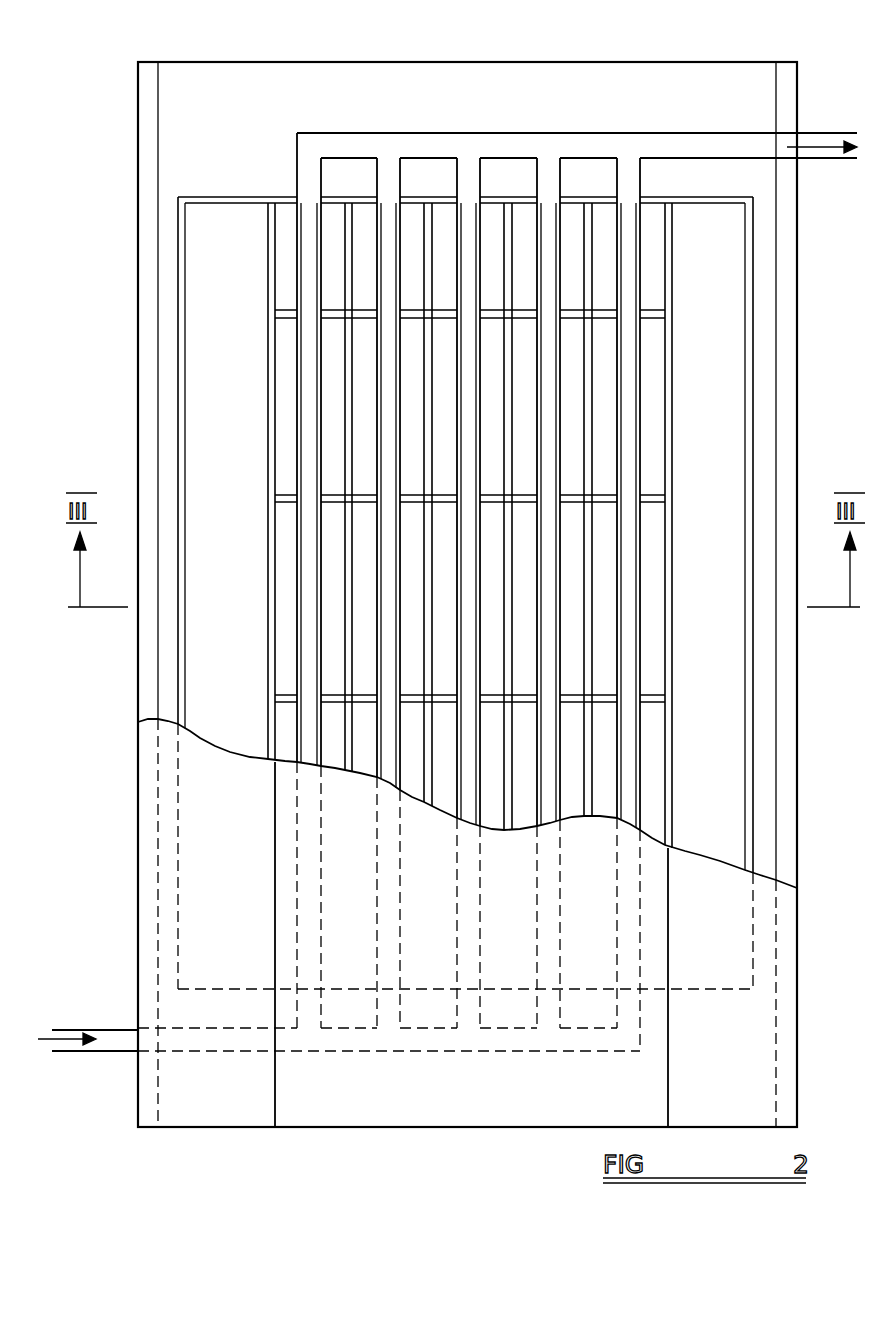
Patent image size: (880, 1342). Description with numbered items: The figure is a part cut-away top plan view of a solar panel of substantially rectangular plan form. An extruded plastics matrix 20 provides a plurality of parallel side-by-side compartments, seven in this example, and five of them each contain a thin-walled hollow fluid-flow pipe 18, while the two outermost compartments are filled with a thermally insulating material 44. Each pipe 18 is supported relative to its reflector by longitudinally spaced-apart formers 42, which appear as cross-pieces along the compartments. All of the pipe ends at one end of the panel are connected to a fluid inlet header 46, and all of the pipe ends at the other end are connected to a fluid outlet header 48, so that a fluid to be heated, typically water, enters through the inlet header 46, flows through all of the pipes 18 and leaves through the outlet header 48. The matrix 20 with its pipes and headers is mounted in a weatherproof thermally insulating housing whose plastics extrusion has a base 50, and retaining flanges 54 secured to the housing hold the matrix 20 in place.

The base 50 is at (577, 108).
The fluid outlet header 48 is at (810, 133).
The fluid inlet header 46 is at (118, 1052).
The extruded plastics matrix 20 is at (214, 194).
The thin-walled hollow pipes 18 is at (625, 355).
The formers 42 is at (650, 496).
The thermally insulating material 44 is at (212, 673).
The retaining flanges 54 is at (215, 855).